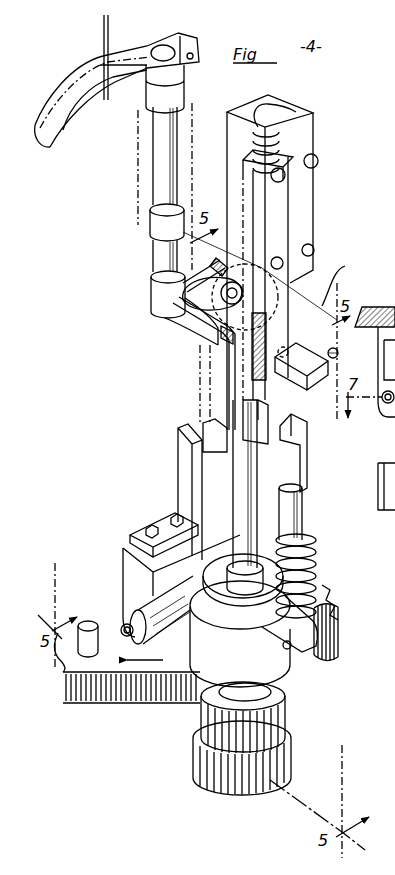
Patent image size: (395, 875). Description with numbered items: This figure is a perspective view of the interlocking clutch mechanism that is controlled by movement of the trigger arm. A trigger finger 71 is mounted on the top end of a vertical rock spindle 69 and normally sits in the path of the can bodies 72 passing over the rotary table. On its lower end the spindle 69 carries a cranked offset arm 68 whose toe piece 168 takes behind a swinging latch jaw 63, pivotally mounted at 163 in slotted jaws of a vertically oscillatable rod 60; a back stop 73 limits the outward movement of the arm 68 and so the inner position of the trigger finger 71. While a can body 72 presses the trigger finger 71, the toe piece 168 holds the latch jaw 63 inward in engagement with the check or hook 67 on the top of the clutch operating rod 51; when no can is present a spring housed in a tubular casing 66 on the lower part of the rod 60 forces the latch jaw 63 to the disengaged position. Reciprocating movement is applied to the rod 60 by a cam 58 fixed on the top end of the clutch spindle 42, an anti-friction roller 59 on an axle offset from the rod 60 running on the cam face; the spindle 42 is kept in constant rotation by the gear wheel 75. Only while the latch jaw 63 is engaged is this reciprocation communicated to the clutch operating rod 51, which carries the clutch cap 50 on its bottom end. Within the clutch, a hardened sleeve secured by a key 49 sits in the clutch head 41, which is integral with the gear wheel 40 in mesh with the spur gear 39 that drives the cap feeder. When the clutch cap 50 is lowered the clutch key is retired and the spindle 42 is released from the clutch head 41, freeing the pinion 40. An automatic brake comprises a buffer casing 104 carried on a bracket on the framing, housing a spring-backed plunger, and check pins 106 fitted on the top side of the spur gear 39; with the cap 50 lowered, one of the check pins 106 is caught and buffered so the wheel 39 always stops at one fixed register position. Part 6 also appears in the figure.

The can body 72 is at (110, 17).
The trigger finger 71 is at (125, 58).
The vertical rock spindle 69 is at (165, 182).
The vertically oscillatable rod 60 is at (276, 335).
The pivot of latch jaw 163 is at (350, 281).
The anti-friction roller 59 is at (200, 273).
The cam 58 is at (190, 332).
The cranked offset arm 68 is at (226, 367).
The toe piece 168 is at (222, 442).
The swinging latch jaw 63 is at (287, 402).
The tubular casing 66 is at (310, 358).
The check or hook 67 is at (298, 443).
The clutch operating rod 51 is at (297, 502).
The clutch cap 50 is at (338, 647).
The clutch spindle 42 is at (238, 488).
The clutch head 41 is at (253, 620).
The gear wheel 40 is at (285, 712).
The gear wheel 75 is at (287, 766).
The spur gear 39 is at (118, 707).
The casing 104 is at (135, 575).
The check pins 106 is at (88, 622).
The back stop 73 is at (188, 468).
The key 49 is at (375, 375).
The frame 6 is at (379, 567).